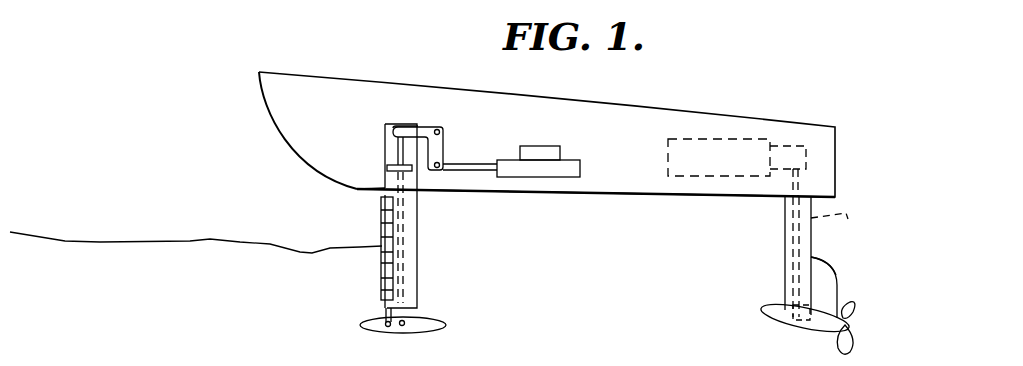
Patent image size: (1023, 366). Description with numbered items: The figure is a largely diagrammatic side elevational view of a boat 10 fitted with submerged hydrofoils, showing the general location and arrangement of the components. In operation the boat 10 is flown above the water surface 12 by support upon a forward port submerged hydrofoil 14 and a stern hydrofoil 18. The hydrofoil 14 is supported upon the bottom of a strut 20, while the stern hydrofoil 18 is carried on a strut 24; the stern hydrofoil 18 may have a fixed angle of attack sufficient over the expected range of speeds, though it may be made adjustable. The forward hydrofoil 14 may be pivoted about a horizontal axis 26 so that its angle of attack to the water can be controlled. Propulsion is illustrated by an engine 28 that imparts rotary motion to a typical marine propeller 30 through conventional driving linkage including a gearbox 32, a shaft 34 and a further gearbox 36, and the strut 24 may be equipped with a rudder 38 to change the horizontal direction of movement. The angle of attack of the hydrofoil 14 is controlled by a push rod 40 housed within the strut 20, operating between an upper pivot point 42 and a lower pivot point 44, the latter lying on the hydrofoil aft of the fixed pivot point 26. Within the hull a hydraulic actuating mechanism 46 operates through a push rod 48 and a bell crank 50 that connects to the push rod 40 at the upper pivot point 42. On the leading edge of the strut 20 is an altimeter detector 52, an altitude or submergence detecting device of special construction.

The boat 10 is at (625, 105).
The water surface 12 is at (203, 240).
The forward port submerged hydrofoil 14 is at (364, 319).
The stern hydrofoil 18 is at (780, 322).
The strut 20 is at (418, 222).
The strut 24 is at (785, 232).
The horizontal axis 26 is at (389, 327).
The engine 28 is at (712, 140).
The marine propeller 30 is at (855, 318).
The gearbox 32 is at (786, 146).
The shaft 34 is at (833, 225).
The further gearbox 36 is at (800, 310).
The rudder 38 is at (830, 268).
The push rod 40 is at (397, 153).
The upper pivot point 42 is at (405, 128).
The lower pivot point 44 is at (405, 323).
The hydraulic actuating mechanism 46 is at (508, 146).
The push rod 48 is at (456, 164).
The bell crank 50 is at (443, 140).
The altimeter detector 52 is at (381, 228).